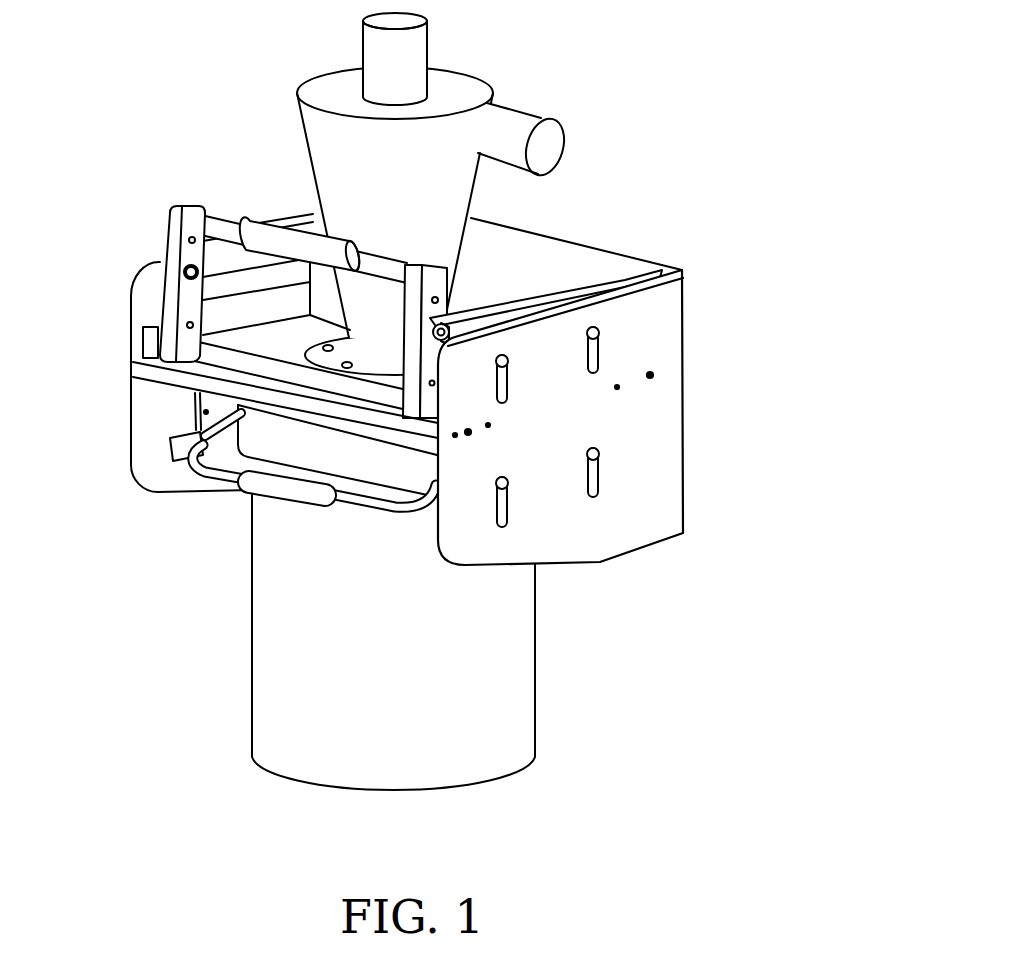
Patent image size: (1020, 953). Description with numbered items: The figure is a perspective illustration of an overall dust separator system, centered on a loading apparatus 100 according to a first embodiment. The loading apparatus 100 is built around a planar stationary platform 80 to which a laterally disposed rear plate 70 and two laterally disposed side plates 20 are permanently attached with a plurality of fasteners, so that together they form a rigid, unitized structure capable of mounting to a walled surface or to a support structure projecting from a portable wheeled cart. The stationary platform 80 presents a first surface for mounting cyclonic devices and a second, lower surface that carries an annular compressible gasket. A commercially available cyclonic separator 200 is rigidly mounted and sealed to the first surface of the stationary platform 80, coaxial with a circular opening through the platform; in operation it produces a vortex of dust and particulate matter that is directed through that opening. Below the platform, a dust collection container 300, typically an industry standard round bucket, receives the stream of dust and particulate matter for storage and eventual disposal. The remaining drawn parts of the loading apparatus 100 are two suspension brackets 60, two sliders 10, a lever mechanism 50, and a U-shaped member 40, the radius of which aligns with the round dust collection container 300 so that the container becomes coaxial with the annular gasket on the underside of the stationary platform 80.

The slider 10 is at (655, 272).
The side plate 20 is at (660, 495).
The U-shaped member 40 is at (170, 460).
The lever mechanism 50 is at (170, 208).
The suspension bracket 60 is at (190, 405).
The rear plate 70 is at (578, 242).
The stationary platform 80 is at (153, 373).
The loading apparatus 100 is at (449, 349).
The cyclonic separator 200 is at (532, 104).
The dust collection container 300 is at (540, 700).